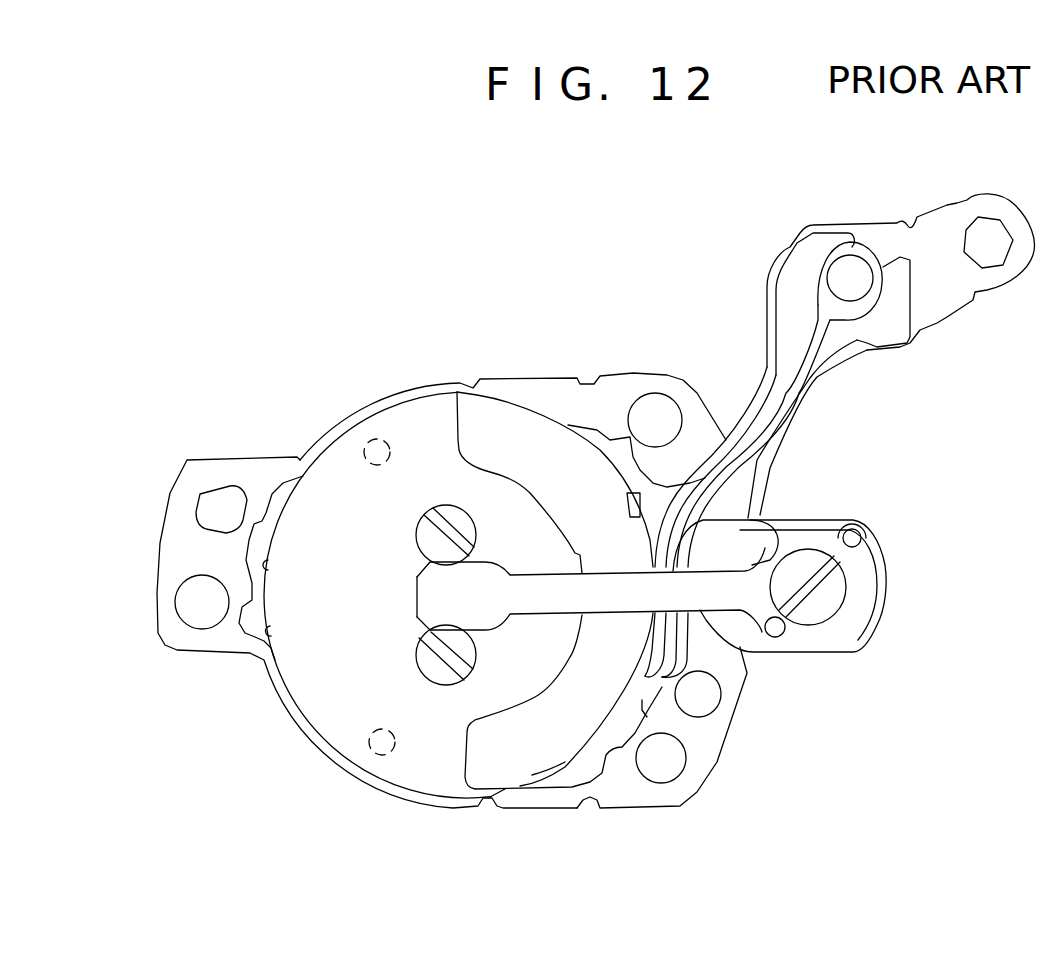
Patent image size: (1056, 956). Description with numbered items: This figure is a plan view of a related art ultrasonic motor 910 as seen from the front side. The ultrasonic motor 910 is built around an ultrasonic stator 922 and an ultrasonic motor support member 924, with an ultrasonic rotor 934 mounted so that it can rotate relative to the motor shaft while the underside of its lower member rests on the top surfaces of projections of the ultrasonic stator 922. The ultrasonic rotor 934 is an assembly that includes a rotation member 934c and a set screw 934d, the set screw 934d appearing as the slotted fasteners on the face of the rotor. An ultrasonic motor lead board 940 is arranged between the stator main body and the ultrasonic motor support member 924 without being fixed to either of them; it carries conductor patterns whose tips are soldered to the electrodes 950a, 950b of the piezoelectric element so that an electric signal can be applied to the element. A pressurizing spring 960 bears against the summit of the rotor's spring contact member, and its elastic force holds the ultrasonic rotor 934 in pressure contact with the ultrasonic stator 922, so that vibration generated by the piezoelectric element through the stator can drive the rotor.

The ultrasonic motor 910 is at (455, 254).
The ultrasonic stator 922 is at (500, 444).
The ultrasonic motor support member 924 is at (642, 792).
The ultrasonic rotor 934 is at (330, 708).
The rotation member 934c is at (343, 472).
The set screw 934d is at (452, 521).
The ultrasonic motor lead board 940 is at (869, 250).
The electrode 950a is at (752, 400).
The electrode 950b is at (787, 410).
The pressurizing spring 960 is at (707, 597).